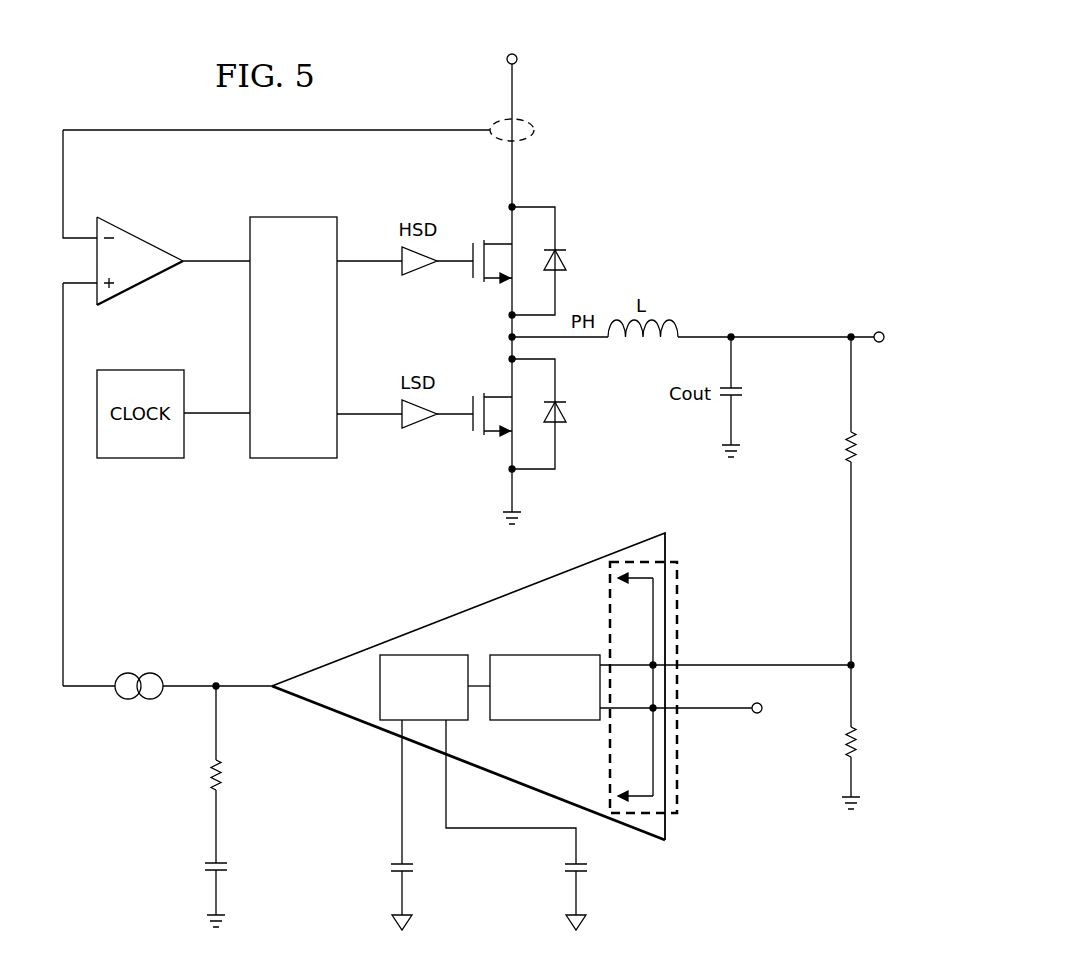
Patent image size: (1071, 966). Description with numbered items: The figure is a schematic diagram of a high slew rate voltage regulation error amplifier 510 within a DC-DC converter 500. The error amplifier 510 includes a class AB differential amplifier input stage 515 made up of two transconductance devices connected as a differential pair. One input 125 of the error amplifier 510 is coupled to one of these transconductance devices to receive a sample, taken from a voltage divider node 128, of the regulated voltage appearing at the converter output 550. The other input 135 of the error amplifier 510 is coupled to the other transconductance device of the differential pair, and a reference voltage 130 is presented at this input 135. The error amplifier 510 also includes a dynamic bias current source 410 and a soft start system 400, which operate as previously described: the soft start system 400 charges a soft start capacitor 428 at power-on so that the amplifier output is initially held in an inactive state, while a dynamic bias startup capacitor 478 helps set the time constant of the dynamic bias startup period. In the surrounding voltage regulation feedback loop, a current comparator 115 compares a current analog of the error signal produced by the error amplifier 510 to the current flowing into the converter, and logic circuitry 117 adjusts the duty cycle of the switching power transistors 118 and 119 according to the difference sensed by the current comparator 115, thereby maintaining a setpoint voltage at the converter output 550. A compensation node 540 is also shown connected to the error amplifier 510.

The DC-DC converter 500 is at (730, 108).
The current comparator 115 is at (140, 237).
The logic circuitry 117 is at (288, 217).
The switching power transistor 118 is at (556, 186).
The switching power transistor 119 is at (473, 404).
The converter output 550 is at (882, 331).
The voltage divider node 128 is at (855, 670).
The reference voltage 130 is at (803, 725).
The error amplifier 510 is at (468, 608).
The compensation node 540 is at (250, 685).
The soft start system 400 is at (380, 698).
The dynamic bias current source 410 is at (547, 722).
The soft start capacitor 428 is at (413, 867).
The dynamic bias startup capacitor 478 is at (592, 867).
The class AB differential amplifier input stage 515 is at (678, 777).
The input of the error amplifier 125 is at (725, 663).
The input of the error amplifier 135 is at (700, 712).